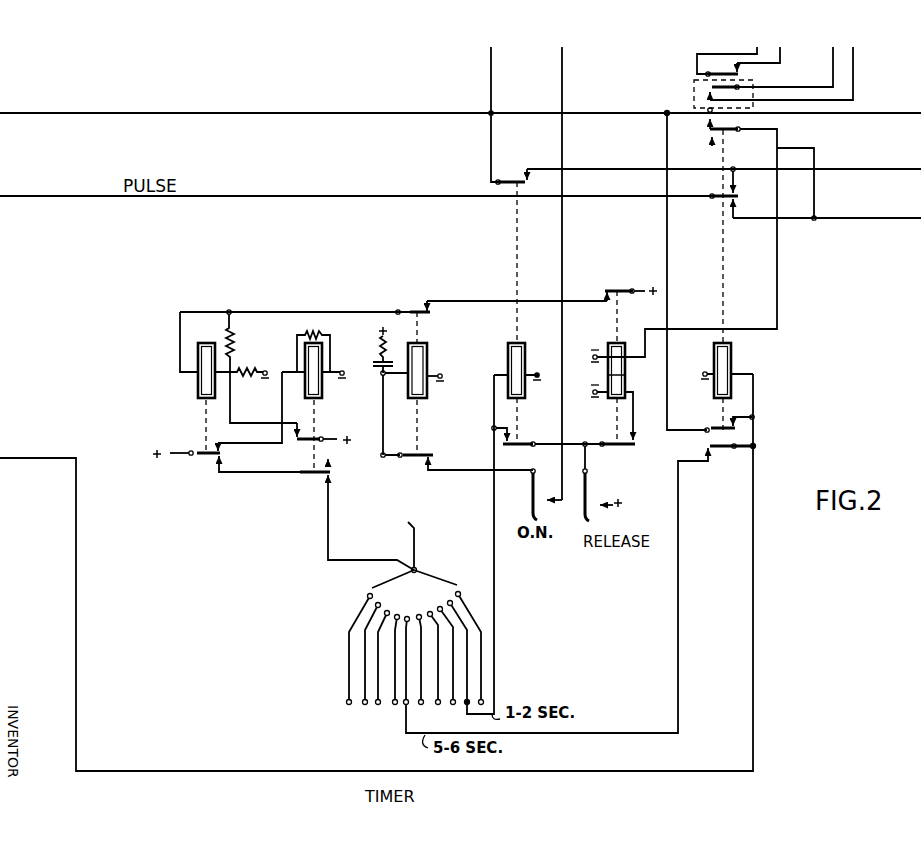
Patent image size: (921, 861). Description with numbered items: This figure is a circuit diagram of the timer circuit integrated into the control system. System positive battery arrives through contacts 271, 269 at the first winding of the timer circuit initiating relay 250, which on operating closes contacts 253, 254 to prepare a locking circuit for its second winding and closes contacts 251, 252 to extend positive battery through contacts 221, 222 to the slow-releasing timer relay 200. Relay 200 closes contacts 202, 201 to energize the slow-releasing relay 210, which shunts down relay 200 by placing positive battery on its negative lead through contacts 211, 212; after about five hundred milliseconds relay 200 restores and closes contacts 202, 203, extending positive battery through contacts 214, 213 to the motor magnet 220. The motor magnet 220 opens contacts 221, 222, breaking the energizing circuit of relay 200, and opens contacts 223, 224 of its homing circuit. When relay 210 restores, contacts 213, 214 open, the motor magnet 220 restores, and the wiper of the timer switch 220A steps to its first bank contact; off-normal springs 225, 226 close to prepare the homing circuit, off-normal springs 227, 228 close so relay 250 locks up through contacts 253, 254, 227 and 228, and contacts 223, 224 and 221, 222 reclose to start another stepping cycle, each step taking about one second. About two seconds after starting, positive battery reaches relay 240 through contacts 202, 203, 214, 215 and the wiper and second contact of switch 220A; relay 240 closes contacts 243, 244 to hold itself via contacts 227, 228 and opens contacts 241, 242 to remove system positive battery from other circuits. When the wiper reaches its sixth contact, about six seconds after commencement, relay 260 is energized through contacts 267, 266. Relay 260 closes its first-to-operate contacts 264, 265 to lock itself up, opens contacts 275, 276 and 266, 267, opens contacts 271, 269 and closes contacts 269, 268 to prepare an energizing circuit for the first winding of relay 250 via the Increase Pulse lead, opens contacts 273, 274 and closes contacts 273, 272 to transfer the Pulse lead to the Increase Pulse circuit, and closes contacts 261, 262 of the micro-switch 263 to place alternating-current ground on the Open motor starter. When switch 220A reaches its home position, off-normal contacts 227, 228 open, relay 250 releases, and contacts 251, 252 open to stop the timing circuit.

The slow-releasing timer relay 200 is at (198, 365).
The contact 201 is at (215, 446).
The contact 202 is at (199, 458).
The contact 203 is at (221, 458).
The slow-releasing relay 210 is at (305, 358).
The contact 211 is at (306, 428).
The contact 212 is at (298, 441).
The contact 213 is at (334, 465).
The contact 214 is at (327, 476).
The contact 215 is at (330, 478).
The motor magnet 220 is at (428, 350).
The timer switch 220A is at (415, 613).
The contact 221 is at (429, 300).
The contact 222 is at (410, 309).
The contact 223 is at (421, 454).
The contact 224 is at (425, 472).
The off-normal spring 225 is at (532, 503).
The off-normal spring 226 is at (544, 505).
The off-normal spring 227 is at (605, 483).
The off-normal spring 228 is at (602, 508).
The relay 240 is at (525, 364).
The contact 241 is at (526, 172).
The contact 242 is at (520, 181).
The contact 243 is at (515, 437).
The contact 244 is at (505, 444).
The timer circuit initiating relay 250 is at (620, 370).
The contact 251 is at (618, 288).
The contact 252 is at (610, 298).
The contact 253 is at (633, 435).
The contact 254 is at (607, 444).
The relay 260 is at (730, 363).
The contact 261 is at (700, 88).
The contact 262 is at (700, 98).
The micro-switch 263 is at (755, 108).
The contact 264 is at (755, 416).
The contact 265 is at (718, 423).
The contact 266 is at (725, 449).
The contact 267 is at (703, 453).
The contact 268 is at (706, 142).
The contact 269 is at (727, 130).
The contact 271 is at (705, 126).
The contact 272 is at (735, 198).
The contact 273 is at (712, 197).
The contact 274 is at (751, 180).
The contact 275 is at (742, 71).
The contact 276 is at (697, 64).